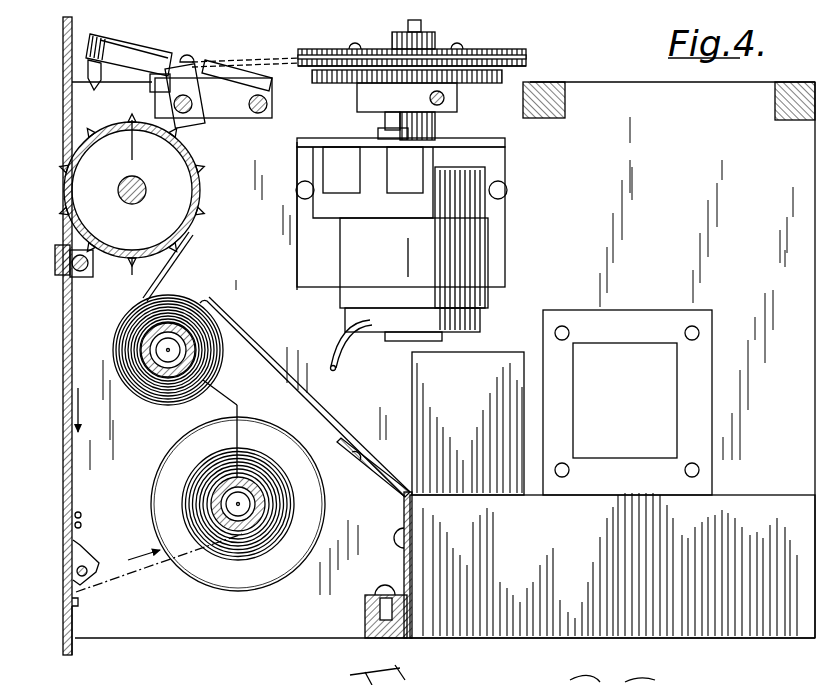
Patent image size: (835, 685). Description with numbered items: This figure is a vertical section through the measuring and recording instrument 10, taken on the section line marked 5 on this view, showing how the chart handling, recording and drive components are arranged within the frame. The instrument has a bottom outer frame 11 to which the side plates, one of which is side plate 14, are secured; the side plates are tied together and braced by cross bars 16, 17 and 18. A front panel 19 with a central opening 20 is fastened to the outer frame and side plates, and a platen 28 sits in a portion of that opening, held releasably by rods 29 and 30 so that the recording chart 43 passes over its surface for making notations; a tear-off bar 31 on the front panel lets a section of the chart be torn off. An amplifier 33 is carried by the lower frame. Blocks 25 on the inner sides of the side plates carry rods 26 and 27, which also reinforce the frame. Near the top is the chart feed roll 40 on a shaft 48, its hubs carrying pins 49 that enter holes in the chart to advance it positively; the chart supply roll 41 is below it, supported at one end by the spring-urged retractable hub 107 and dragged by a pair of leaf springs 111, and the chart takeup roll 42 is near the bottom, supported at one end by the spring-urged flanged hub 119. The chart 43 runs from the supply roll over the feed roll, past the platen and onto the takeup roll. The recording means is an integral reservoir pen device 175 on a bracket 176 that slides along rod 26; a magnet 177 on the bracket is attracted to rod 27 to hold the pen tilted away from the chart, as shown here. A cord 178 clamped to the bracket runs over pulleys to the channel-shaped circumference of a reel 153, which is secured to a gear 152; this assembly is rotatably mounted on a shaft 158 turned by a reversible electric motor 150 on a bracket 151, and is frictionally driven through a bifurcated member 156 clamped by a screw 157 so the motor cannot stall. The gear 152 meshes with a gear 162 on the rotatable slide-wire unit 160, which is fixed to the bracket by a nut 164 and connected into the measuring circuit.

The section line 5 is at (146, 100).
The measuring and recording instrument 10 is at (50, 118).
The bottom outer frame 11 is at (192, 284).
The side plate 14 is at (603, 93).
The cross bar 16 is at (565, 108).
The cross bar 17 is at (785, 106).
The cross bar 18 is at (376, 622).
The front panel 19 is at (63, 37).
The central opening 20 is at (66, 612).
The block 25 is at (228, 120).
The rod 26 is at (186, 115).
The rod 27 is at (260, 115).
The platen 28 is at (63, 452).
The rod 29 is at (82, 277).
The rod 30 is at (72, 572).
The tear-off bar 31 is at (55, 264).
The amplifier 33 is at (752, 493).
The chart feed roll 40 is at (176, 205).
The chart supply roll 41 is at (148, 347).
The chart takeup roll 42 is at (270, 508).
The recording chart 43 is at (108, 273).
The shaft 48 is at (134, 200).
The pin 49 is at (203, 186).
The retractable rotatable hub 107 is at (160, 358).
The leaf spring 111 is at (310, 416).
The flanged hub 119 is at (162, 500).
The reversible electric motor 150 is at (472, 250).
The bracket 151 is at (493, 214).
The gear 152 is at (505, 78).
The reel 153 is at (485, 52).
The bifurcated member 156 is at (500, 82).
The screw 157 is at (440, 107).
The shaft 158 is at (425, 26).
The rotatable slide-wire unit 160 is at (313, 208).
The gear 162 is at (345, 88).
The nut 164 is at (377, 134).
The integral reservoir pen device 175 is at (124, 42).
The bracket 176 is at (244, 62).
The magnet 177 is at (272, 60).
The cord 178 is at (184, 55).